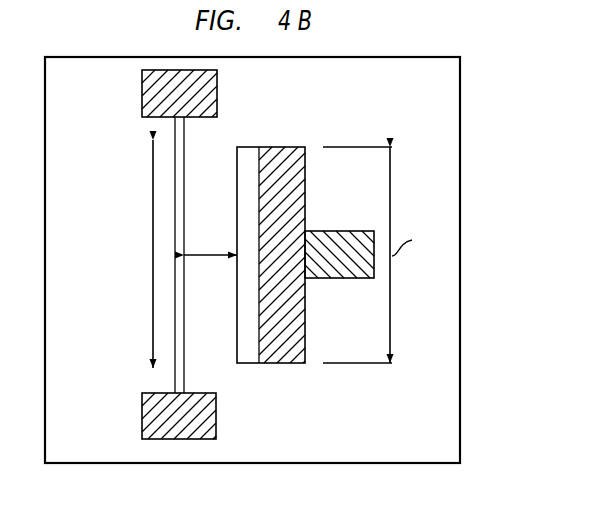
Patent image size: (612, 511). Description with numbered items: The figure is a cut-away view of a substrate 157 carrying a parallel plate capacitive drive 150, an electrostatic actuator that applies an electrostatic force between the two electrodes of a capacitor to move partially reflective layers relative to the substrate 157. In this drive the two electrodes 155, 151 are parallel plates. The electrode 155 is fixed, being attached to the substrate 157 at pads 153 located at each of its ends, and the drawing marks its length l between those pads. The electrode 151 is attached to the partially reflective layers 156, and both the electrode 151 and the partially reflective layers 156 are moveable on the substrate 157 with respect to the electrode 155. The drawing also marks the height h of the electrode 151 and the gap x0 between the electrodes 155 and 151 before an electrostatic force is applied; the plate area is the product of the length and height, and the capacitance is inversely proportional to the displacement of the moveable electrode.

The parallel plate capacitive drive 150 is at (311, 450).
The electrode 151 is at (244, 147).
The pads 153 is at (142, 113).
The electrode 155 is at (175, 297).
The partially reflective layers 156 is at (337, 231).
The substrate 157 is at (461, 116).